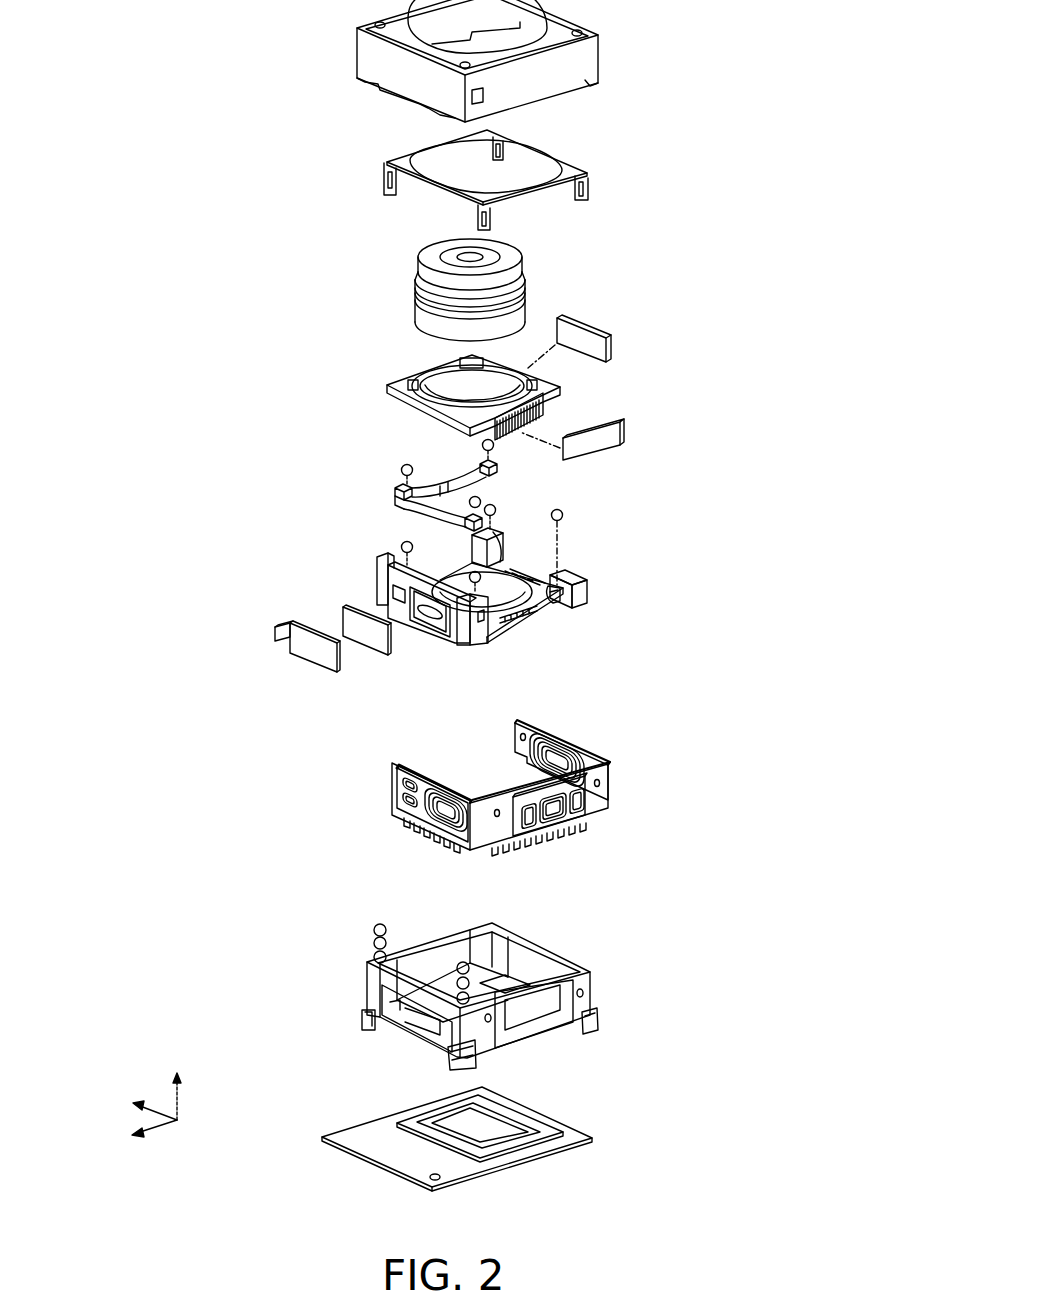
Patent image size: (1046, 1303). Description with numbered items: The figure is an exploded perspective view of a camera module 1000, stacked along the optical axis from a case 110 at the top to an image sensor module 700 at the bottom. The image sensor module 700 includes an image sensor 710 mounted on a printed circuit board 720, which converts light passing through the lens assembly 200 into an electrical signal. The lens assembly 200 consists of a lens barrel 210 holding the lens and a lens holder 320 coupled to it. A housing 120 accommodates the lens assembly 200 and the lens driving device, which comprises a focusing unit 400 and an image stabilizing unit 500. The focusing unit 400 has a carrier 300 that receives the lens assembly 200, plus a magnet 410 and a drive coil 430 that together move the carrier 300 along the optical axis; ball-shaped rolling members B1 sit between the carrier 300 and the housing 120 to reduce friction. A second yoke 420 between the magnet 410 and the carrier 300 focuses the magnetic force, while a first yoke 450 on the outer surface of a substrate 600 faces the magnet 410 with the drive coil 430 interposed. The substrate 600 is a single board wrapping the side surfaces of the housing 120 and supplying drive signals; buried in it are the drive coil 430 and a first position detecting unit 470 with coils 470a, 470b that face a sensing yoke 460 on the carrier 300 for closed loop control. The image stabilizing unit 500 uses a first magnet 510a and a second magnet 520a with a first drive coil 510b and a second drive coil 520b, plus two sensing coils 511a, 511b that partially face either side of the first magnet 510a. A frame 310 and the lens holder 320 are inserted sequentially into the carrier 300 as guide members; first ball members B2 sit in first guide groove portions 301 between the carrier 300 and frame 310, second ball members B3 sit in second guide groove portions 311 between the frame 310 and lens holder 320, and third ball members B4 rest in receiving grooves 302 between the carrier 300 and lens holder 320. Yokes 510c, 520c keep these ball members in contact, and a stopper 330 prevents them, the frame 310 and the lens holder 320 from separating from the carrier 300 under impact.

The camera module 1000 is at (323, 100).
The case 110 is at (585, 62).
The stopper 330 is at (560, 163).
The lens assembly 200 is at (283, 307).
The lens barrel 210 is at (417, 300).
The lens holder 320 is at (396, 362).
The second magnet 520a is at (578, 340).
The image stabilizing unit 500 is at (736, 435).
The first magnet 510a is at (613, 437).
The second guide groove portions 311 is at (402, 487).
The second ball members B3 is at (403, 466).
The frame 310 is at (385, 479).
The first ball members B2 is at (494, 506).
The first guide groove portions 301 is at (502, 532).
The third ball members B4 is at (562, 511).
The yoke 520c is at (566, 577).
The receiving grooves 302 is at (562, 600).
The yoke 510c is at (535, 630).
The focusing unit 400 is at (290, 600).
The second yoke 420 is at (343, 616).
The sensing yoke 460 is at (278, 641).
The magnet 410 is at (310, 657).
The carrier 300 is at (549, 587).
The second drive coil 520b is at (548, 748).
The first yoke 450 is at (351, 819).
The first position detecting unit 470 is at (324, 814).
The coil 470a is at (394, 786).
The coil 470b is at (398, 800).
The drive coil 430 is at (417, 827).
The substrate 600 is at (456, 807).
The rolling members B1 is at (462, 961).
The 1-1-th sensing coil 511a is at (518, 838).
The first drive coil 510b is at (552, 820).
The 1-2-th sensing coil 511b is at (580, 828).
The housing 120 is at (368, 982).
The image sensor 710 is at (503, 1135).
The printed circuit board 720 is at (458, 1168).
The image sensor module 700 is at (655, 1145).